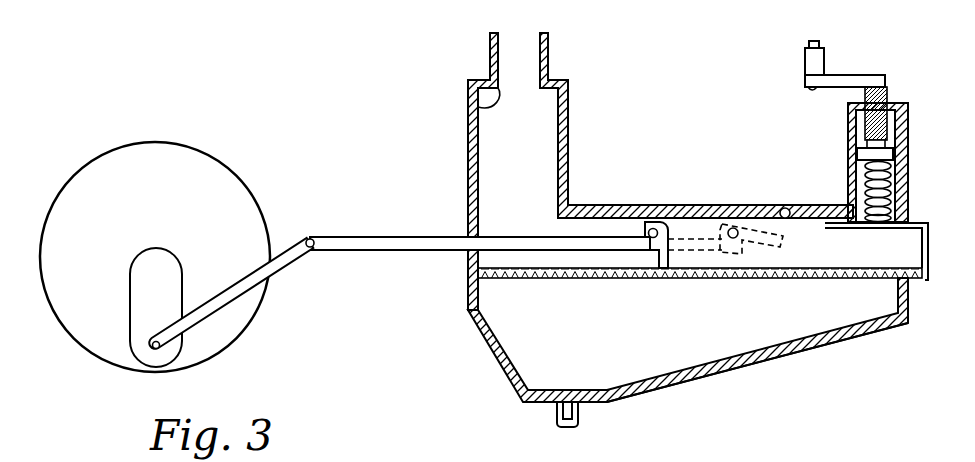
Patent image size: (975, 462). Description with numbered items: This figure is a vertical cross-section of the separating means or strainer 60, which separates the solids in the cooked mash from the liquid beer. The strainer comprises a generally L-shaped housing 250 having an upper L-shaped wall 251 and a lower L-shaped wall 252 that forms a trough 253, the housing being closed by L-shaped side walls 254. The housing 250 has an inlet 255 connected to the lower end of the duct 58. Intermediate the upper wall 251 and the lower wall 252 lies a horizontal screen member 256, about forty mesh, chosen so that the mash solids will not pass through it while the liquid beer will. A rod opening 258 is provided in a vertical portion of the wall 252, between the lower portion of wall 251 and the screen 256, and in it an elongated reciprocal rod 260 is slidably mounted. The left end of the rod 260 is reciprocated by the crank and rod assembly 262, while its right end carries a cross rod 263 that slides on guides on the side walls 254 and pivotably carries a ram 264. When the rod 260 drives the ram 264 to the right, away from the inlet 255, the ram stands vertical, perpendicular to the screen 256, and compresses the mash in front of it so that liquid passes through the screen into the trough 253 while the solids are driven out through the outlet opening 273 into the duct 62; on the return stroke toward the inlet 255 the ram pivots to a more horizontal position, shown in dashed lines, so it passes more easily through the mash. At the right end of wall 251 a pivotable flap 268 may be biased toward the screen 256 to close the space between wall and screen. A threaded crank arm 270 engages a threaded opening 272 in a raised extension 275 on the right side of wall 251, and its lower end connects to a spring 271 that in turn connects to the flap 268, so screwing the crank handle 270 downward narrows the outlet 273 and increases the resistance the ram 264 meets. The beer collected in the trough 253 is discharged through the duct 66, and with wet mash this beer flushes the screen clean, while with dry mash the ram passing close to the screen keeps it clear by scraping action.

The duct 58 is at (548, 58).
The strainer 60 is at (494, 366).
The duct 62 is at (905, 266).
The duct 66 is at (578, 416).
The housing 250 is at (565, 147).
The upper L-shaped wall 251 is at (647, 215).
The lower L-shaped wall 252 is at (687, 380).
The trough 253 is at (600, 367).
The L-shaped side walls 254 is at (642, 349).
The inlet 255 is at (478, 107).
The horizontal screen member 256 is at (512, 276).
The rod opening 258 is at (467, 260).
The elongated reciprocal rod 260 is at (357, 238).
The crank and rod assembly 262 is at (242, 203).
The cross rod 263 is at (648, 232).
The ram 264 is at (705, 214).
The pivotable flap 268 is at (823, 224).
The threaded crank arm 270 is at (847, 76).
The spring 271 is at (870, 190).
The threaded opening 272 is at (848, 113).
The outlet opening 273 is at (872, 266).
The raised extension 275 is at (848, 170).